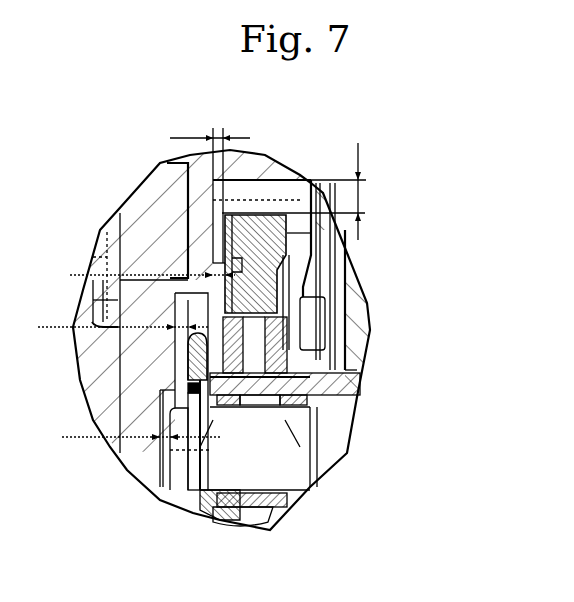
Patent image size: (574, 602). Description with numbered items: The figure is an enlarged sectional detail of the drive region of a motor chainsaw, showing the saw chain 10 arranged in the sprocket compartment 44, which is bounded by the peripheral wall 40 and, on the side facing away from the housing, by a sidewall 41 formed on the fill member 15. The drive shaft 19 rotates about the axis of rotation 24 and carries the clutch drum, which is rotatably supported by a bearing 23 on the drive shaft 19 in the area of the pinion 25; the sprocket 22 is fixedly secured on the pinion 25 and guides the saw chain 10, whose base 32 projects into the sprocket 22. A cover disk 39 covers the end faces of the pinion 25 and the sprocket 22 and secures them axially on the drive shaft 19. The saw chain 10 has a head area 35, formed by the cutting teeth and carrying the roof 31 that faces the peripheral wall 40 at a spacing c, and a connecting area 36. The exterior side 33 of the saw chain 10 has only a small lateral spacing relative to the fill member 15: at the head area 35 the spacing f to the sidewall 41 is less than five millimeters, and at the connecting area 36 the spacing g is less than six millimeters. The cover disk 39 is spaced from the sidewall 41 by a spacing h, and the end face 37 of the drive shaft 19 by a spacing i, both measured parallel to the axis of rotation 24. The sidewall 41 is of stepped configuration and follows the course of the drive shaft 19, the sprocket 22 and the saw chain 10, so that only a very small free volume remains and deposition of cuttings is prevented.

The saw chain 10 is at (240, 258).
The fill member 15 is at (130, 387).
The drive shaft 19 is at (285, 500).
The sprocket 22 is at (330, 395).
The bearing 23 is at (240, 512).
The axis of rotation 24 is at (345, 455).
The pinion 25 is at (180, 480).
The roof 31 is at (245, 215).
The base 32 is at (303, 450).
The exterior side 33 is at (215, 220).
The head area 35 is at (272, 228).
The connecting area 36 is at (285, 282).
The end face 37 is at (160, 463).
The cover disk 39 is at (190, 340).
The peripheral wall 40 is at (270, 200).
The sidewall 41 is at (213, 193).
The sprocket compartment 44 is at (297, 193).